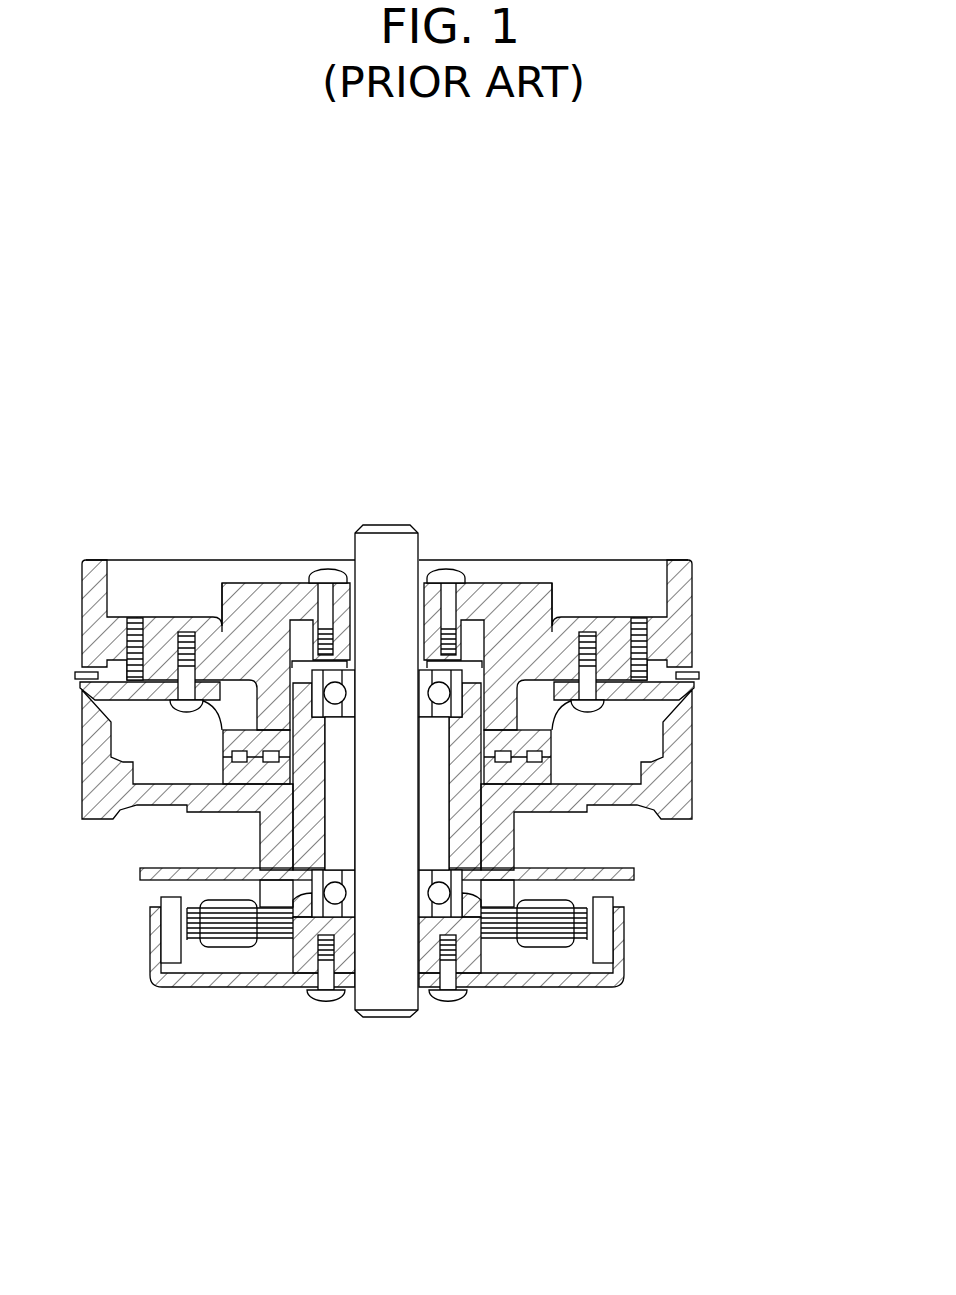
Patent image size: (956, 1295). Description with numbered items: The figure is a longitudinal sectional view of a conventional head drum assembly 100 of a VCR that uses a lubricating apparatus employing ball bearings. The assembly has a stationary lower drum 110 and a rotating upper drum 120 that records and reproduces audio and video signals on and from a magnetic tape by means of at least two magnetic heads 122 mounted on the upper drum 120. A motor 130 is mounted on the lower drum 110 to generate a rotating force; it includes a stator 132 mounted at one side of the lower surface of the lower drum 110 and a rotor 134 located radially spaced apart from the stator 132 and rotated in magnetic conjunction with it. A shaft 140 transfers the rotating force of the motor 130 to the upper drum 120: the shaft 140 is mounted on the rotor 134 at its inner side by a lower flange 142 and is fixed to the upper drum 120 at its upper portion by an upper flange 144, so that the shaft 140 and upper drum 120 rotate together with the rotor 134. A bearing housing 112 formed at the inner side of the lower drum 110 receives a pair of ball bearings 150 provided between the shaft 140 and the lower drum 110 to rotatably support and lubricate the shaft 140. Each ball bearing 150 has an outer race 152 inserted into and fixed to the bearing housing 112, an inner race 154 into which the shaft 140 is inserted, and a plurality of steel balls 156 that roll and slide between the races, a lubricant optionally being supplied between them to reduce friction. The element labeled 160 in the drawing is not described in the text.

The head drum assembly 100 is at (417, 323).
The lower drum 110 is at (683, 788).
The bearing housing 112 is at (482, 838).
The upper drum 120 is at (683, 637).
The magnetic heads 122 is at (700, 681).
The motor 130 is at (482, 933).
The stator 132 is at (587, 937).
The rotor 134 is at (607, 925).
The shaft 140 is at (388, 524).
The lower flange 142 is at (462, 945).
The upper flange 144 is at (466, 648).
The ball bearings 150 is at (482, 906).
The outer race 152 is at (316, 908).
The inner race 154 is at (350, 907).
The balls 156 is at (337, 900).
The thrust ring / shim 160 is at (545, 745).